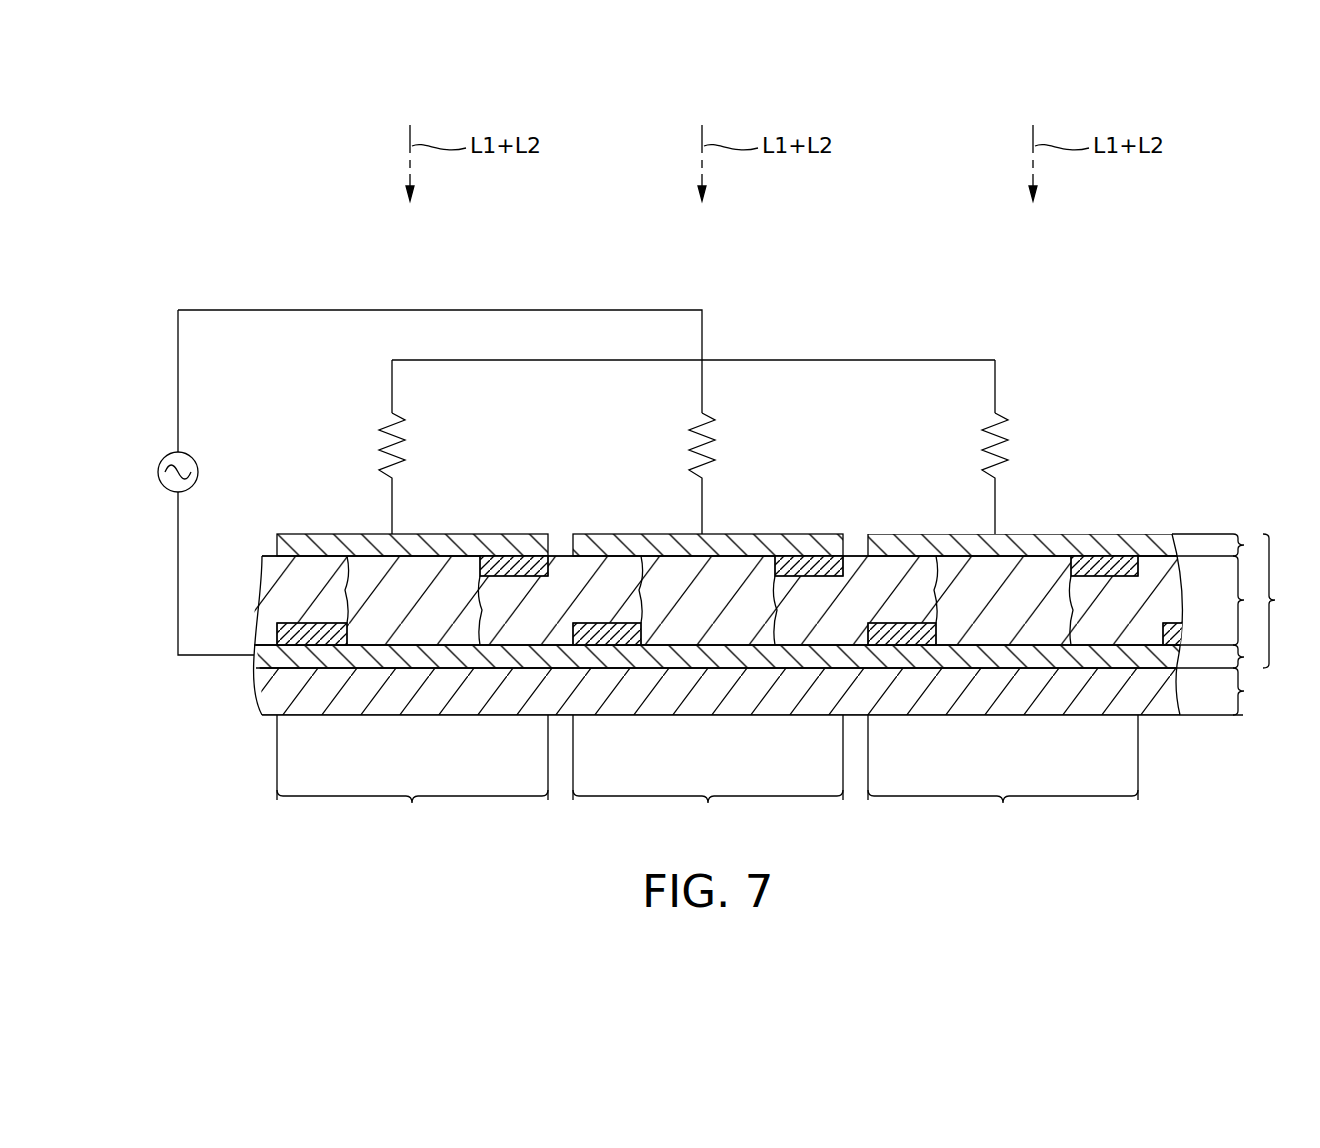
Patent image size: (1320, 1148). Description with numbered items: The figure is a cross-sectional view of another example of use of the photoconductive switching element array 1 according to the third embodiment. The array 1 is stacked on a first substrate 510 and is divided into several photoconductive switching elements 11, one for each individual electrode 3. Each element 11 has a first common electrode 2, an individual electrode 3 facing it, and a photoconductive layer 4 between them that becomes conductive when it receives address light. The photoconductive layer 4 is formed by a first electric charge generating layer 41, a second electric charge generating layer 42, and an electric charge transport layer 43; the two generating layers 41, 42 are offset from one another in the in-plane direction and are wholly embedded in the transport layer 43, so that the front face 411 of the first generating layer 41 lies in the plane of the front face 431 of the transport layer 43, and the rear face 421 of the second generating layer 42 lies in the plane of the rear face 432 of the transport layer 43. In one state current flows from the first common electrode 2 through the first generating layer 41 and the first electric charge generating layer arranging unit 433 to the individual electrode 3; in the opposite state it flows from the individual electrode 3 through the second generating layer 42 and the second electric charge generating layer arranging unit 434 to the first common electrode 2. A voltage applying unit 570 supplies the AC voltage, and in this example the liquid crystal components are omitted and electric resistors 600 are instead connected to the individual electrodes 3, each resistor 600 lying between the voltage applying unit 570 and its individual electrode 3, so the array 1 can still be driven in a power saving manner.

The photoconductive switching element array 1 is at (1277, 601).
The first common electrode 2 is at (748, 657).
The individual electrode 3 is at (766, 546).
The photoconductive layer 4 is at (732, 614).
The photoconductive switching element 11 is at (707, 773).
The first electric charge generating layer 41 is at (716, 686).
The second electric charge generating layer 42 is at (854, 527).
The electric charge transport layer 43 is at (736, 614).
The front face of the first electric charge generating layer 411 is at (312, 645).
The rear face of the second electric charge generating layer 421 is at (523, 534).
The front face of the electric charge transport layer 431 is at (718, 645).
The rear face of the electric charge transport layer 432 is at (675, 555).
The first electric charge generating layer arranging unit 433 is at (664, 589).
The second electric charge generating layer arranging unit 434 is at (753, 610).
The first substrate 510 is at (762, 691).
The voltage applying unit 570 is at (165, 457).
The electric resistor 600 is at (407, 424).